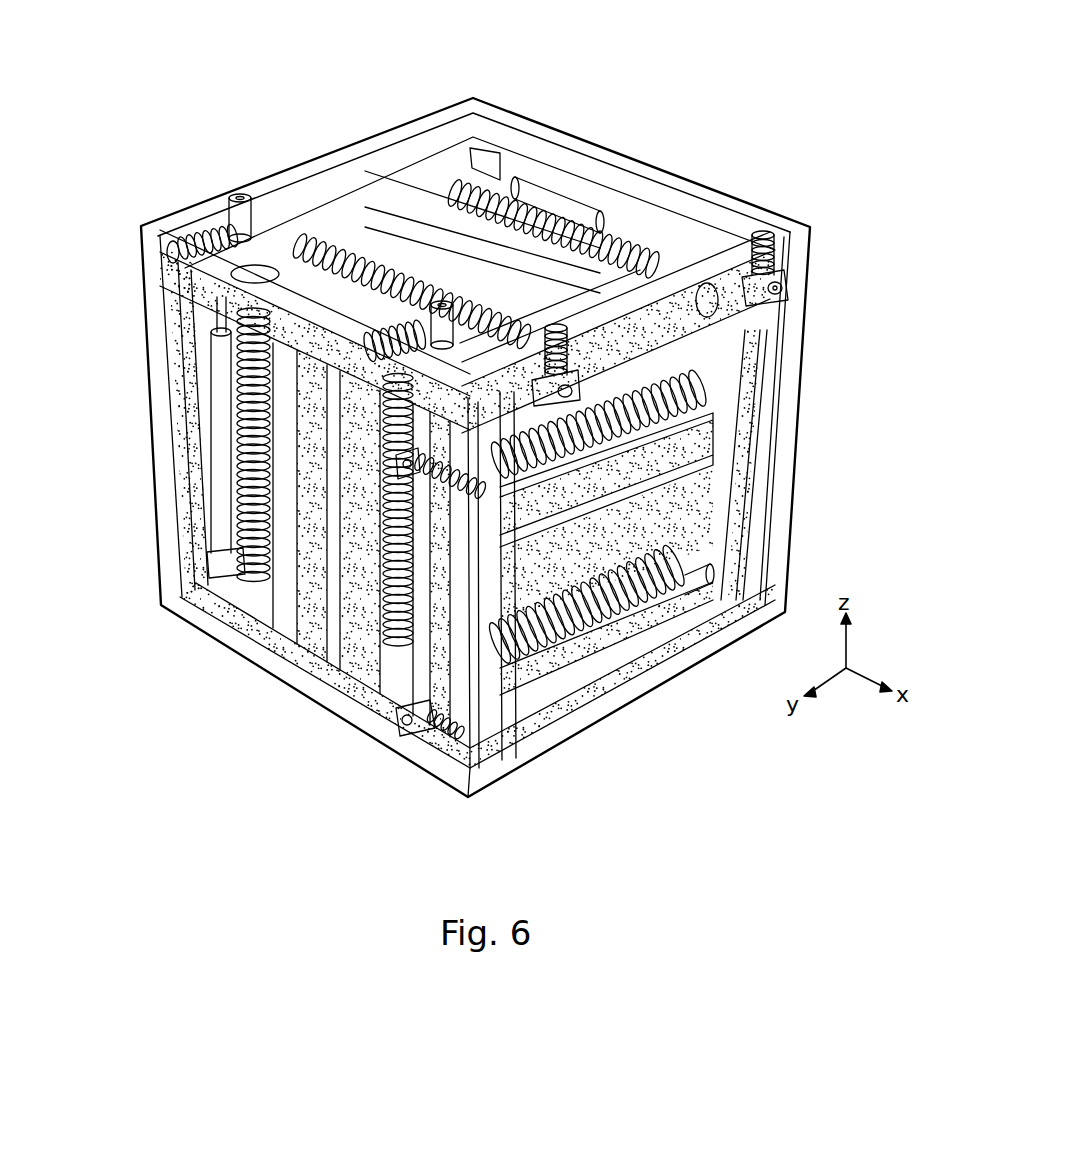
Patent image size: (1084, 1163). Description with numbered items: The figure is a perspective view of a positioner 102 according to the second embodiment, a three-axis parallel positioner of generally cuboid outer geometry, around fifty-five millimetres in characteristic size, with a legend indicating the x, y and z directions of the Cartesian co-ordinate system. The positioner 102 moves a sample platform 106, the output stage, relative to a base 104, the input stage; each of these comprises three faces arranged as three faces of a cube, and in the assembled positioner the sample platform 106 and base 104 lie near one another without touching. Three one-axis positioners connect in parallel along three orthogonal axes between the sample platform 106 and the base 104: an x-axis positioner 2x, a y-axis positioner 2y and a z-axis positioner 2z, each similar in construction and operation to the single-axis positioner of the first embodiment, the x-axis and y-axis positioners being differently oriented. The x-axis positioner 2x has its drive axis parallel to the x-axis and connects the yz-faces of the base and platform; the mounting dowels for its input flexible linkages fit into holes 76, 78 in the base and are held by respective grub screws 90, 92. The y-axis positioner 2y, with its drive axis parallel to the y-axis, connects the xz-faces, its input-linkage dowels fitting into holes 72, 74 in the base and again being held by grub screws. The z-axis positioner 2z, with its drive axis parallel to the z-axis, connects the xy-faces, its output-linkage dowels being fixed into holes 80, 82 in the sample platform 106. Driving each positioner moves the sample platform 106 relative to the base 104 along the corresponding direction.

The positioner 102 is at (519, 76).
The base 104 is at (148, 390).
The sample platform 106 is at (178, 216).
The hole 80 is at (237, 210).
The hole 82 is at (441, 302).
The grub screw 90 is at (556, 326).
The grub screw 92 is at (765, 232).
The hole 72 is at (395, 742).
The hole 74 is at (372, 478).
The hole 76 is at (722, 453).
The hole 78 is at (778, 289).
The x-axis positioner 2x is at (620, 575).
The y-axis positioner 2y is at (568, 248).
The z-axis positioner 2z is at (276, 465).